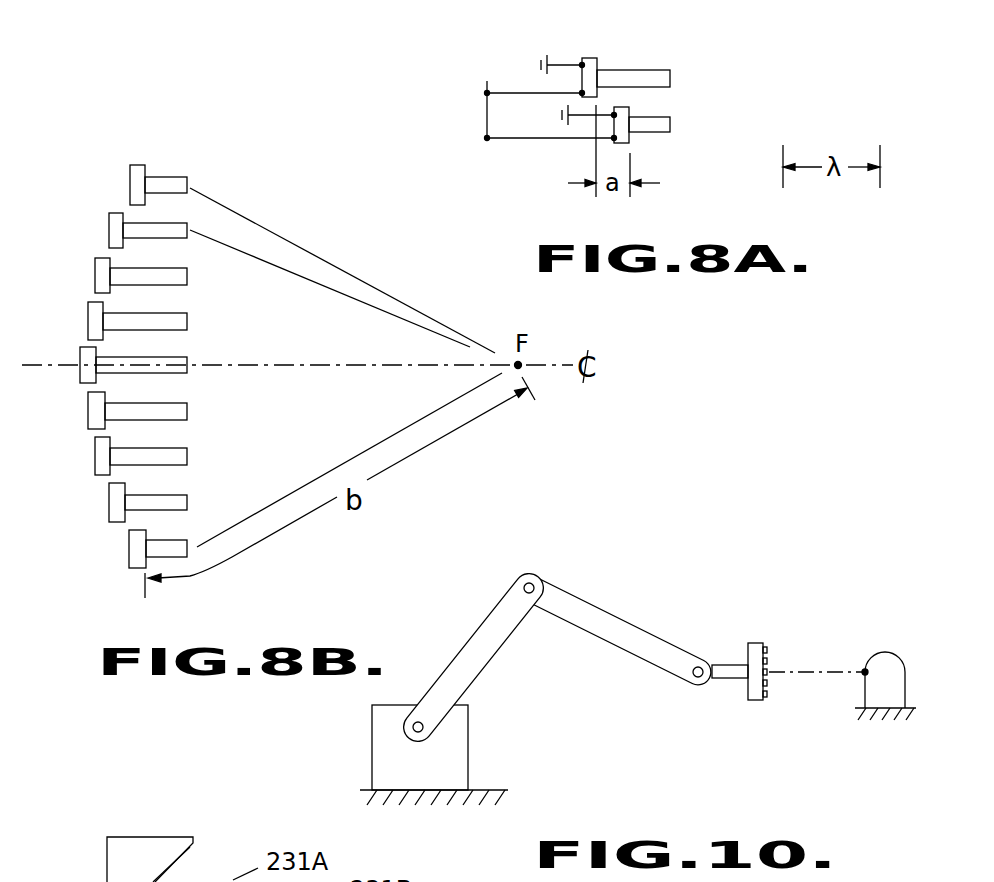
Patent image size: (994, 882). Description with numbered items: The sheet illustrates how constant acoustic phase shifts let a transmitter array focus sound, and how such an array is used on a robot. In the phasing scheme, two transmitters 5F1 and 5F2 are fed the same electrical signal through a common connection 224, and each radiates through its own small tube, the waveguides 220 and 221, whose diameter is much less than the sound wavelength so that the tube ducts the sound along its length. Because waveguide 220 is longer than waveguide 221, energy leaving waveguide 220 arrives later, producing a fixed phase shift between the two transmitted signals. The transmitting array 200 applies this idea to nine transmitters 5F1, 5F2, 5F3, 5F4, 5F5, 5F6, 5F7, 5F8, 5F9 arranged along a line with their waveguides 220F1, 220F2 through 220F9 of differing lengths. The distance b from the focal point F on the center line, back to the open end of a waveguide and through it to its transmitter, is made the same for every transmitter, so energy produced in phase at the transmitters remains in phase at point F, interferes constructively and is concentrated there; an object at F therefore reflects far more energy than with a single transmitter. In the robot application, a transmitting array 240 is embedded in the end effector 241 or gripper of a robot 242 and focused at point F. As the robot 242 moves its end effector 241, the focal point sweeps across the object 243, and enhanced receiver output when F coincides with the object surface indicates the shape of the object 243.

In FIG. 8A, the waveguide 220 is at (635, 61).
In FIG. 8A, the waveguide 221 is at (674, 131).
In FIG. 8A, the connection 224 is at (487, 146).
In FIG. 8A, the transmitter 5F1 is at (597, 57).
In FIG. 8B, the transmitter 5F1 is at (172, 174).
In FIG. 8A, the transmitter 5F2 is at (632, 139).
In FIG. 8B, the transmitter 5F2 is at (185, 215).
In FIG. 8B, the transmitter 5F3 is at (95, 266).
In FIG. 8B, the transmitter 5F4 is at (88, 310).
In FIG. 8B, the transmitter 5F5 is at (80, 355).
In FIG. 8B, the transmitter 5F6 is at (88, 414).
In FIG. 8B, the transmitter 5F7 is at (95, 465).
In FIG. 8B, the transmitter 5F8 is at (109, 511).
In FIG. 8B, the transmitter 5F9 is at (171, 535).
In FIG. 8B, the waveguide 220F1 is at (180, 177).
In FIG. 8B, the waveguide 220F2 is at (183, 223).
In FIG. 8B, the waveguide 220F9 is at (187, 540).
In FIG. 8B, the focused transducer array 200 is at (387, 410).
In FIG. 10, the transmitting array 240 is at (757, 700).
In FIG. 10, the end effector 241 is at (728, 665).
In FIG. 10, the robot 242 is at (638, 628).
In FIG. 10, the object 243 is at (870, 694).